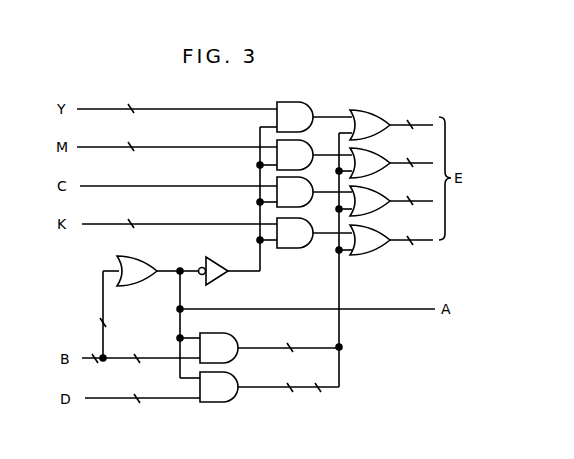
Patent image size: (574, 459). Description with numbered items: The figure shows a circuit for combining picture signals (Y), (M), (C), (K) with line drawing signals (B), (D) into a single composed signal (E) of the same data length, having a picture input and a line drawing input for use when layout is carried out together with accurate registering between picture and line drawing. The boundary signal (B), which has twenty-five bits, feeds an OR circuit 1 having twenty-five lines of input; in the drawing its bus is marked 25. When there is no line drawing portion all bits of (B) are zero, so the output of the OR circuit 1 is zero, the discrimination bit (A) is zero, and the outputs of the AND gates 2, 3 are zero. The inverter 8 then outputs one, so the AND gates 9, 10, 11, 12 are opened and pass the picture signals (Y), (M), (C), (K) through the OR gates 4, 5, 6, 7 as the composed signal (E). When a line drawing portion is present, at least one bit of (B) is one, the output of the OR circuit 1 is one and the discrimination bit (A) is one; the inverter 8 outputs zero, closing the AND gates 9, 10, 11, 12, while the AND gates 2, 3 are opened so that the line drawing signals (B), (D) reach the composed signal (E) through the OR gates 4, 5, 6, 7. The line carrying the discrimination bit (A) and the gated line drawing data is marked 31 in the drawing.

The OR circuit 1 is at (137, 256).
The AND gate 2 is at (234, 333).
The AND gate 3 is at (240, 372).
The OR gate 4 is at (376, 110).
The OR gate 5 is at (383, 149).
The OR gate 6 is at (383, 188).
The OR gate 7 is at (383, 227).
The inverter 8 is at (222, 257).
The AND gate 9 is at (303, 102).
The AND gate 10 is at (302, 140).
The AND gate 11 is at (302, 177).
The AND gate 12 is at (302, 218).
The 25-bit bus 25 is at (206, 317).
The 31-bit bus line 31 is at (336, 286).